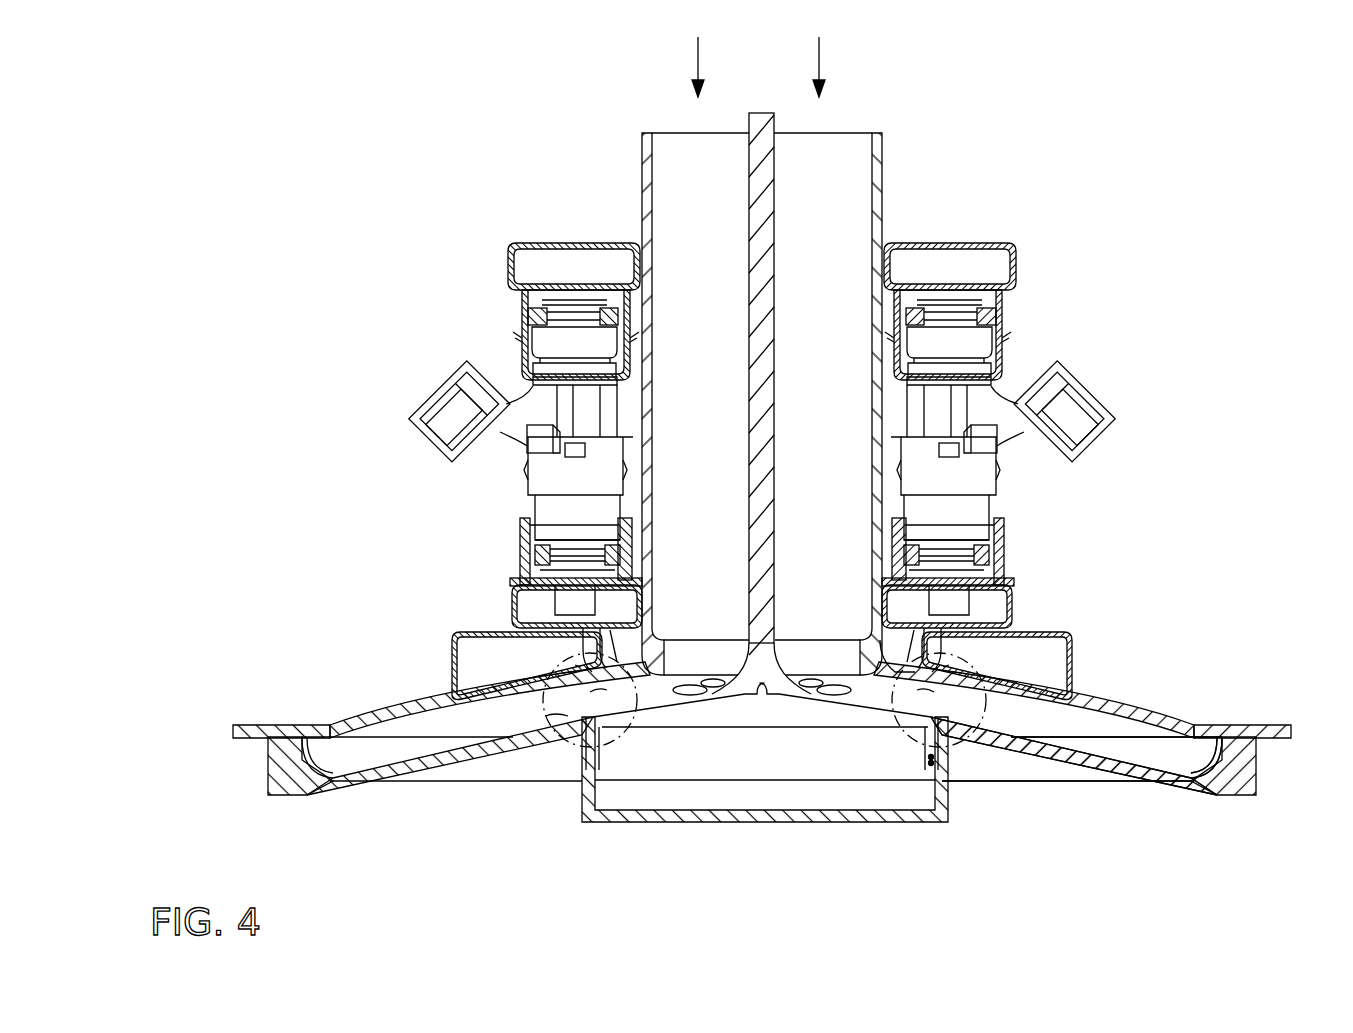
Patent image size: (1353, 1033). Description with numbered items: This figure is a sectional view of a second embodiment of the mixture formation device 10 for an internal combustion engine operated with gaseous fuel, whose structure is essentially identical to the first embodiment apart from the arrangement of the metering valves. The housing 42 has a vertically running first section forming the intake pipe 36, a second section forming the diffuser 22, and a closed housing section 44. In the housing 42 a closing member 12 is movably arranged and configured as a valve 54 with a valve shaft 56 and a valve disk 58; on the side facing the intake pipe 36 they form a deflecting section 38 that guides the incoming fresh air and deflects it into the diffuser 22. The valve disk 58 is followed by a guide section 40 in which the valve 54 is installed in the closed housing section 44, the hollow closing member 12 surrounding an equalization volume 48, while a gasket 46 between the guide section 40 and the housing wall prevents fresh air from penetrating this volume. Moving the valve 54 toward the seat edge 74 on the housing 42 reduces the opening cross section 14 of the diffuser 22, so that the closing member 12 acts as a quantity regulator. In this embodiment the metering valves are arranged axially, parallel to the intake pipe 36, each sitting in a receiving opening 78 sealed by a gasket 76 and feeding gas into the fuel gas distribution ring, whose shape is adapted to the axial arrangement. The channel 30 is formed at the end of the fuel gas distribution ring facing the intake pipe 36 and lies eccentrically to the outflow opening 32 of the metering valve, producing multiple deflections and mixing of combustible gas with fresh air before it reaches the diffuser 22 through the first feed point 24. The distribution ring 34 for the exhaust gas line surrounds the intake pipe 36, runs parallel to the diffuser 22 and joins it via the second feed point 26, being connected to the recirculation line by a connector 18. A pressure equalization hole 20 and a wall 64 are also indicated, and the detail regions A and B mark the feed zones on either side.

The mixture formation device 10 is at (307, 230).
The closing member 12 is at (764, 124).
The opening cross section 14 is at (912, 696).
The connector 18 is at (1065, 670).
The pressure equalization hole 20 is at (945, 653).
The diffuser 22 is at (397, 728).
The first feed point 24 is at (580, 657).
The second feed point 26 is at (550, 720).
The channel 30 is at (907, 642).
The outflow opening 32 is at (953, 615).
The distribution ring for the exhaust gas line 34 is at (486, 665).
The intake pipe 36 is at (877, 229).
The deflecting section 38 is at (762, 590).
The guide section 40 is at (962, 738).
The housing 42 is at (292, 772).
The closed housing section 44 is at (683, 816).
The gasket 46 is at (593, 760).
The equalization volume 48 is at (760, 790).
The valve 54 is at (762, 288).
The valve shaft 56 is at (764, 208).
The valve disk 58 is at (673, 704).
The wall 64 is at (1128, 711).
The seat edge 74 is at (873, 707).
The gasket 76 is at (540, 555).
The receiving opening 78 is at (526, 531).
The detail region A is at (565, 737).
The detail region B is at (933, 770).